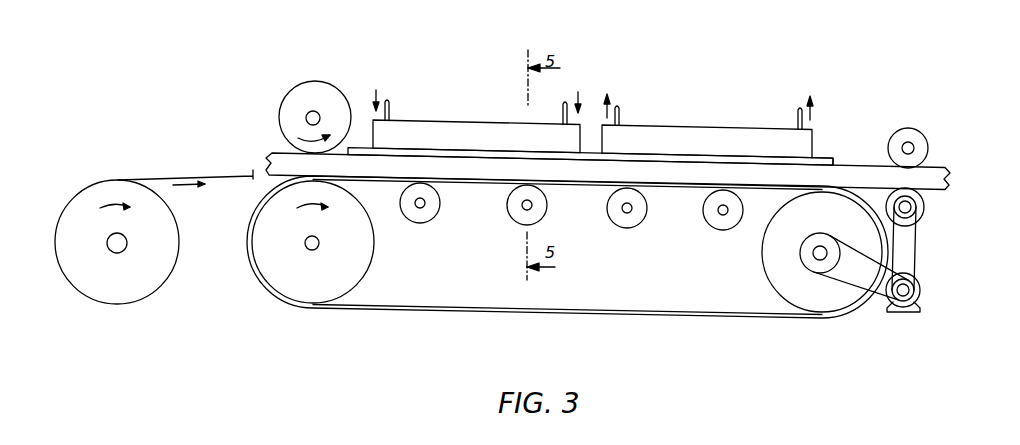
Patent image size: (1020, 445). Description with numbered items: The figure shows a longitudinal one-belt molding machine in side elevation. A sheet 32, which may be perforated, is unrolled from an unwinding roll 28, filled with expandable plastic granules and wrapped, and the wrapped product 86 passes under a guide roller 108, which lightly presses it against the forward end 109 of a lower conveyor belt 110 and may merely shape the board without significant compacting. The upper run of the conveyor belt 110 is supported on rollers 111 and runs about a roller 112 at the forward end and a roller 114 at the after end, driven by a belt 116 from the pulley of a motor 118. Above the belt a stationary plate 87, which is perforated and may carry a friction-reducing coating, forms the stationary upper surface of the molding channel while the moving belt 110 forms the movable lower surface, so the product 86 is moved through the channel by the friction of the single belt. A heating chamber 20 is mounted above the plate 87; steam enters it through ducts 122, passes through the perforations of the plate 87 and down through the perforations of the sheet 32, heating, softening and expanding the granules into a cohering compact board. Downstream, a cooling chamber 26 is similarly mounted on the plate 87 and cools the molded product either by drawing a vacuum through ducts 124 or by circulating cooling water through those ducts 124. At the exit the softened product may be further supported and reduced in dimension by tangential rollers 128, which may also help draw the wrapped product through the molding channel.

The heating chamber 20 is at (493, 145).
The cooling chamber 26 is at (717, 150).
The unwinding roll 28 is at (160, 250).
The sheet 32 is at (167, 177).
The wrapped product 86 is at (563, 165).
The stationary plate 87 is at (817, 160).
The guide roller 108 is at (332, 106).
The forward end 109 is at (256, 199).
The conveyor belt 110 is at (495, 189).
The rollers 111 is at (510, 218).
The forward end roller 112 is at (327, 278).
The after end roller 114 is at (832, 225).
The belt 116 is at (848, 286).
The motor 118 is at (915, 284).
The ducts 122 is at (394, 100).
The ducts 124 is at (620, 108).
The tangential rollers 128 is at (922, 193).